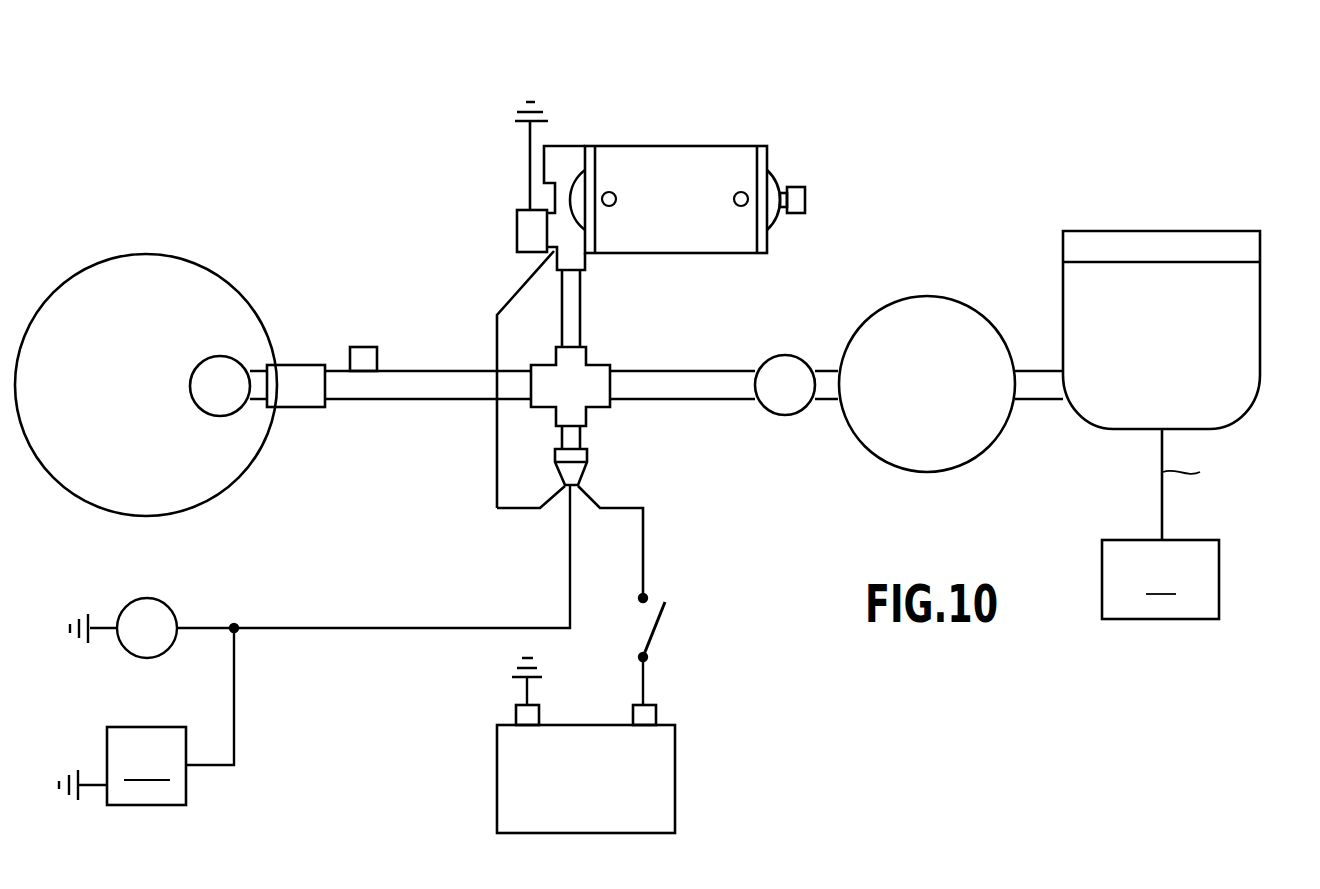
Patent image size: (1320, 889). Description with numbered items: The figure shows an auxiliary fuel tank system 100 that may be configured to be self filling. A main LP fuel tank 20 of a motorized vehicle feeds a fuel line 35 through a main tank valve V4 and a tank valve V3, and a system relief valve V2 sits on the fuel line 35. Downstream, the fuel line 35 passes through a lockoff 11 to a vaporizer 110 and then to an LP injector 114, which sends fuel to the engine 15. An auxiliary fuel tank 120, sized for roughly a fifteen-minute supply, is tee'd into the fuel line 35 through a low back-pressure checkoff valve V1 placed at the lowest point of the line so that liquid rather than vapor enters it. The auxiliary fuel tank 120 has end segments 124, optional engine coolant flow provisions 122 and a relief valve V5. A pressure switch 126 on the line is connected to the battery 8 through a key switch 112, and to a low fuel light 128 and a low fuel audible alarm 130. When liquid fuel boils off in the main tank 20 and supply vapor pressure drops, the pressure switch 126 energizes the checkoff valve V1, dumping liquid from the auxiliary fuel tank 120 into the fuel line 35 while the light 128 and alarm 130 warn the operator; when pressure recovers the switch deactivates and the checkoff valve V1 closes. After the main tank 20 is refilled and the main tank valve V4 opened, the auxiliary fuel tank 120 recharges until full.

The auxiliary fuel tank system 100 is at (1028, 109).
The fuel tank 20 is at (148, 253).
The main tank valve V4 is at (190, 387).
The tank valve V3 is at (291, 410).
The system relief valve V2 is at (364, 345).
The fuel line 35 is at (440, 370).
The checkoff valve V1 is at (515, 234).
The auxiliary fuel tank 120 is at (675, 145).
The end segments 124 is at (592, 145).
The engine coolant flow provisions 122 is at (609, 207).
The relief valve V5 is at (808, 198).
The pressure switch 126 is at (588, 479).
The lockoff 11 is at (788, 354).
The vaporizer 110 is at (928, 295).
The LP injector 114 is at (1163, 231).
The engine 15 is at (1207, 524).
The low fuel light 128 is at (148, 598).
The low fuel audible alarm 130 is at (122, 766).
The key switch 112 is at (660, 632).
The battery 8 is at (587, 705).